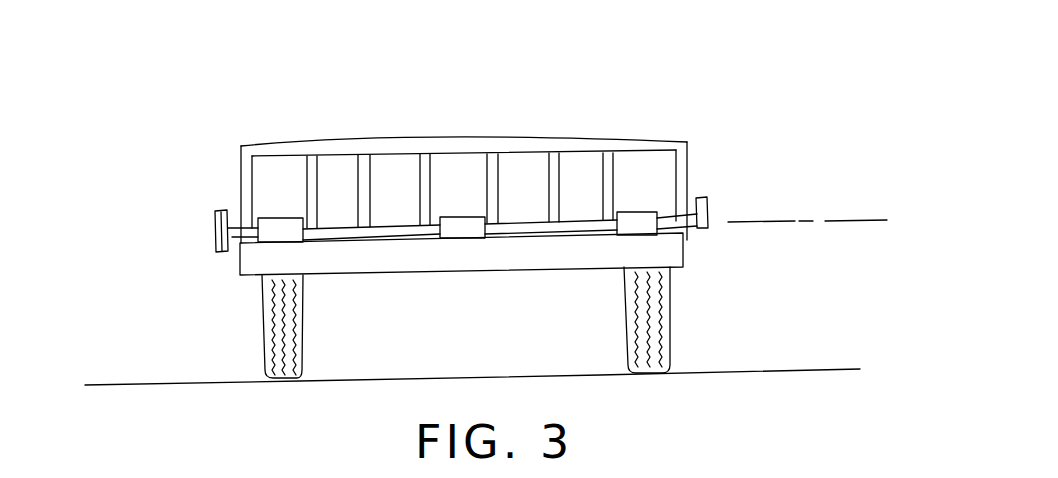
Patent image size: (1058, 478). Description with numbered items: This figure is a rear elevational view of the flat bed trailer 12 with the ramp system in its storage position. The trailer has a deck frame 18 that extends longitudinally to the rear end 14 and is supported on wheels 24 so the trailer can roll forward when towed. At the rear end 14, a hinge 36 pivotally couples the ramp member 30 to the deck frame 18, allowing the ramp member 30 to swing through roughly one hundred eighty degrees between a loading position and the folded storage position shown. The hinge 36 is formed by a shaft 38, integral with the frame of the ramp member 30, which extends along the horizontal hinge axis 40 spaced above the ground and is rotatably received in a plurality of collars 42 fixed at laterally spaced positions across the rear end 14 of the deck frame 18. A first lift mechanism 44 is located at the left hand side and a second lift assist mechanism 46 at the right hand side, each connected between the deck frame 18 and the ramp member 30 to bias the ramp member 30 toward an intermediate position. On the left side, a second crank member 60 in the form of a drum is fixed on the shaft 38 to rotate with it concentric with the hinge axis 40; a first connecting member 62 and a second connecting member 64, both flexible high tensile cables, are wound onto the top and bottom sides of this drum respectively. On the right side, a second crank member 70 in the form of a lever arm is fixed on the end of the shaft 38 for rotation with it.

The flat bed trailer 12 is at (140, 277).
The rear end 14 is at (665, 253).
The deck frame 18 is at (413, 262).
The wheels 24 is at (263, 330).
The ramp member 30 is at (163, 162).
The hinge 36 is at (452, 216).
The shaft 38 is at (528, 223).
The hinge axis 40 is at (862, 219).
The collars 42 is at (286, 218).
The first lift mechanism 44 is at (204, 150).
The second lift assist mechanism 46 is at (716, 153).
The second crank member 60 is at (215, 228).
The first connecting member 62 is at (218, 212).
The second connecting member 64 is at (224, 255).
The second crank member 70 is at (706, 200).